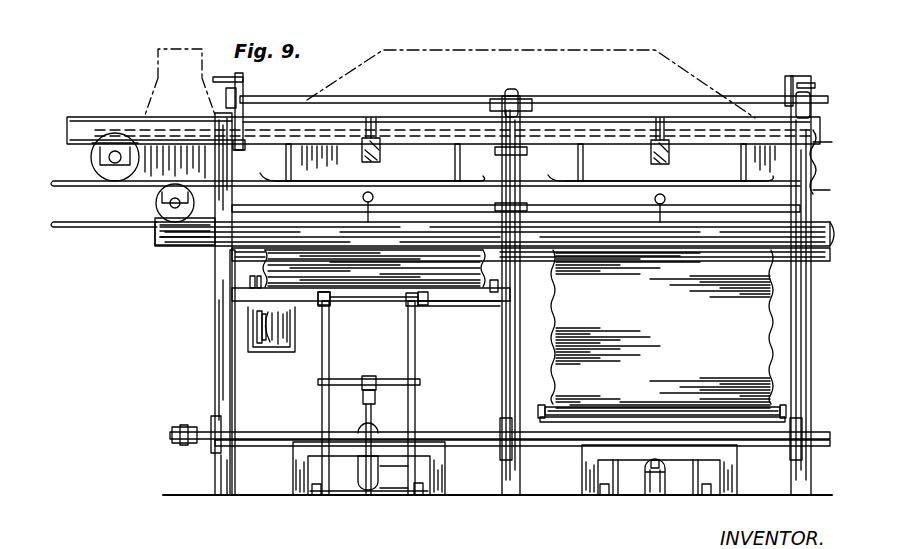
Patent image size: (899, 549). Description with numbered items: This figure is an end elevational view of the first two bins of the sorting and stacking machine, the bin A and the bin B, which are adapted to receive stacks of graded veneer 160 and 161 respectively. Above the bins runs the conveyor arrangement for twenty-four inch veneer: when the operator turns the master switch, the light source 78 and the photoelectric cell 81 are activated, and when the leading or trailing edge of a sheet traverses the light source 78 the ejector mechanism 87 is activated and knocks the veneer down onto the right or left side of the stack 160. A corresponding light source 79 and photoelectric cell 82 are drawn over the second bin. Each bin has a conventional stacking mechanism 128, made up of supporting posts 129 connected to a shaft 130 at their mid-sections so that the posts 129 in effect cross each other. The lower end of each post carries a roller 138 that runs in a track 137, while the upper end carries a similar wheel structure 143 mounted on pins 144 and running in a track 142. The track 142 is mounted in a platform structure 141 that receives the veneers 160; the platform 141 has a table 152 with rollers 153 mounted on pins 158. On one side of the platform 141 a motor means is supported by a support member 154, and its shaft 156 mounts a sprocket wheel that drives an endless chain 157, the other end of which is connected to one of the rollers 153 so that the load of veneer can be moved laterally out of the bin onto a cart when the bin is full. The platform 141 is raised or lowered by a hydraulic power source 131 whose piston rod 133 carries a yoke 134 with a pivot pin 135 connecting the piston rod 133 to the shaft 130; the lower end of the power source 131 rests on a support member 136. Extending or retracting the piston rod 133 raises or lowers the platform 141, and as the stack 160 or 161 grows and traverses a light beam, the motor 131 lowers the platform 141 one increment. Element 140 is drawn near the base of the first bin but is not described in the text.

The photoelectric cell 81 is at (380, 152).
The trolley block 82 is at (650, 163).
The ejector mechanism 87 is at (322, 189).
The light source 78 is at (374, 196).
The stop pin 79 is at (666, 198).
The stack of graded veneer 160 is at (374, 268).
The pin 158 is at (490, 280).
The wheel structure 143 is at (335, 290).
The pin 144 is at (392, 297).
The roller 153 is at (250, 283).
The support member 154 is at (266, 352).
The chain 157 is at (256, 310).
The shaft 156 is at (252, 332).
The stacking mechanism 128 is at (302, 404).
The track 142 is at (326, 310).
The platform structure 141 is at (470, 308).
The supporting post 129 is at (333, 342).
The shaft 130 is at (390, 375).
The yoke 134 is at (368, 375).
The pivot pin 135 is at (363, 396).
The piston rod 133 is at (372, 410).
The table 152 is at (457, 359).
The stack of graded veneer 161 is at (688, 339).
The track 137 is at (308, 482).
The power source 131 is at (352, 462).
The bin A is at (350, 532).
The support member 136 is at (368, 497).
The housing 140 is at (395, 492).
The roller 138 is at (420, 496).
The bin B is at (659, 488).